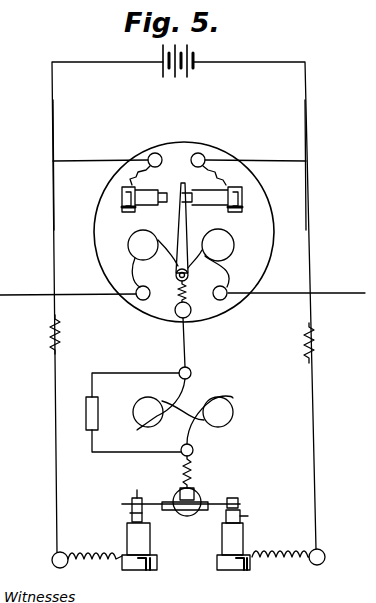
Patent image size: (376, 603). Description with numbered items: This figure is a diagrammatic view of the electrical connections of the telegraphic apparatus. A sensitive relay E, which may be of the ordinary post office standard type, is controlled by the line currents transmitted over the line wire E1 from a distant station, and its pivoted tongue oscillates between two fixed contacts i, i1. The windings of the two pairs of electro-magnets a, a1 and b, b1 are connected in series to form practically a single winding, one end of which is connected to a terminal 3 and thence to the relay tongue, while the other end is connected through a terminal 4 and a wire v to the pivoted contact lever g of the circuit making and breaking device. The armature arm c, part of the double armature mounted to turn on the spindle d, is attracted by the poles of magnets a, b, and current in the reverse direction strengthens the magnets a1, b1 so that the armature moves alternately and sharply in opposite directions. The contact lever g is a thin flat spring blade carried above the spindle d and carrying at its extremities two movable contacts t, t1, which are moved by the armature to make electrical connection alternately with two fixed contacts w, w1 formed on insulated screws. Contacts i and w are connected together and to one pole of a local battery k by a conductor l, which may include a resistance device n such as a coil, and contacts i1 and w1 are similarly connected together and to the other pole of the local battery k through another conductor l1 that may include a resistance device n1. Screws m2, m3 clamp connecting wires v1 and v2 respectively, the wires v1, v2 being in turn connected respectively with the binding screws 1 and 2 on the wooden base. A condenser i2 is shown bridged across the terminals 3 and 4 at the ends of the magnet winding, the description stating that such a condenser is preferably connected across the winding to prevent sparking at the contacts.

The local battery k is at (196, 58).
The conductor l is at (52, 183).
The conductor l1 is at (305, 196).
The sensitive relay E is at (184, 232).
The line wire E1 is at (182, 283).
The fixed contact i is at (144, 209).
The fixed contact i1 is at (212, 209).
The iron bar c is at (181, 242).
The resistance device n is at (65, 334).
The resistance device n1 is at (293, 343).
The terminal 3 is at (191, 371).
The terminal 4 is at (193, 450).
The resistance i2 is at (133, 412).
The electro-magnet a is at (148, 412).
The electro-magnet a1 is at (220, 403).
The electro-magnet b is at (170, 407).
The electro-magnet b1 is at (210, 420).
The wire v is at (192, 472).
The spindle d is at (187, 516).
The pivoted contact lever g is at (165, 506).
The electrical contact t is at (133, 500).
The electrical contact t1 is at (238, 500).
The fixed contact w is at (130, 513).
The fixed contact w1 is at (248, 516).
The screw m2 is at (150, 562).
The screw m3 is at (240, 565).
The binding screw 1 is at (68, 560).
The binding screw 2 is at (317, 565).
The connecting wire v1 is at (102, 560).
The connecting wire v2 is at (285, 560).